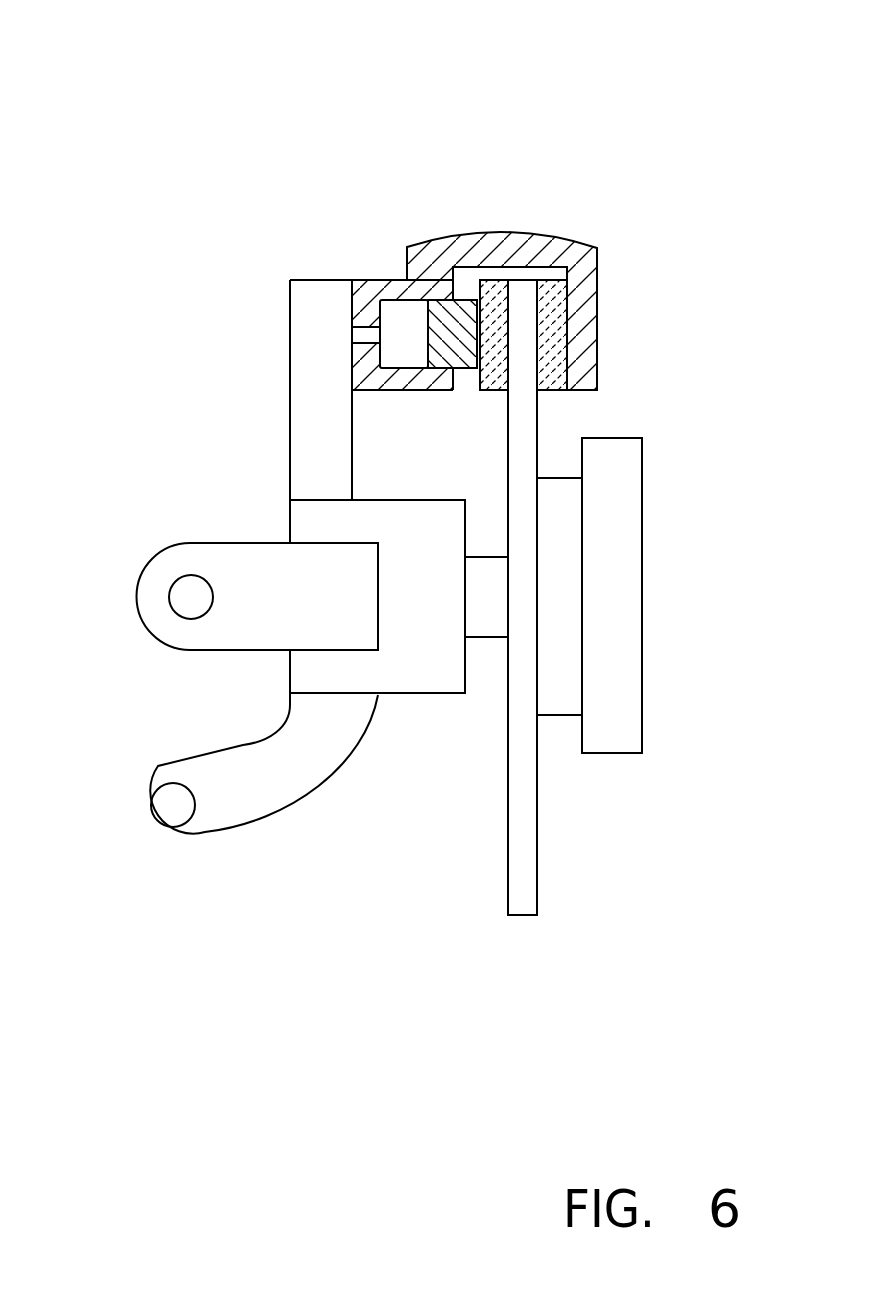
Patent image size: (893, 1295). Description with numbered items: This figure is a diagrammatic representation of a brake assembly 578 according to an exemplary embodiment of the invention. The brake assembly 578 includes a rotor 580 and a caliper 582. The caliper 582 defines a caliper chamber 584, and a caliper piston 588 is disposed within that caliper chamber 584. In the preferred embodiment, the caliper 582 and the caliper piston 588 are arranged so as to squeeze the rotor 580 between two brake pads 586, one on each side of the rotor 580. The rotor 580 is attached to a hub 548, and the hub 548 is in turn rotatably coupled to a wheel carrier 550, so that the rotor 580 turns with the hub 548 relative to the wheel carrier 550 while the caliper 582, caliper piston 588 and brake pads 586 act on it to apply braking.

The hub 548 is at (632, 542).
The wheel carrier 550 is at (392, 695).
The brake assembly 578 is at (417, 563).
The rotor 580 is at (507, 892).
The caliper 582 is at (492, 237).
The caliper chamber 584 is at (400, 338).
The brake pads 586 is at (496, 392).
The caliper piston 588 is at (465, 300).